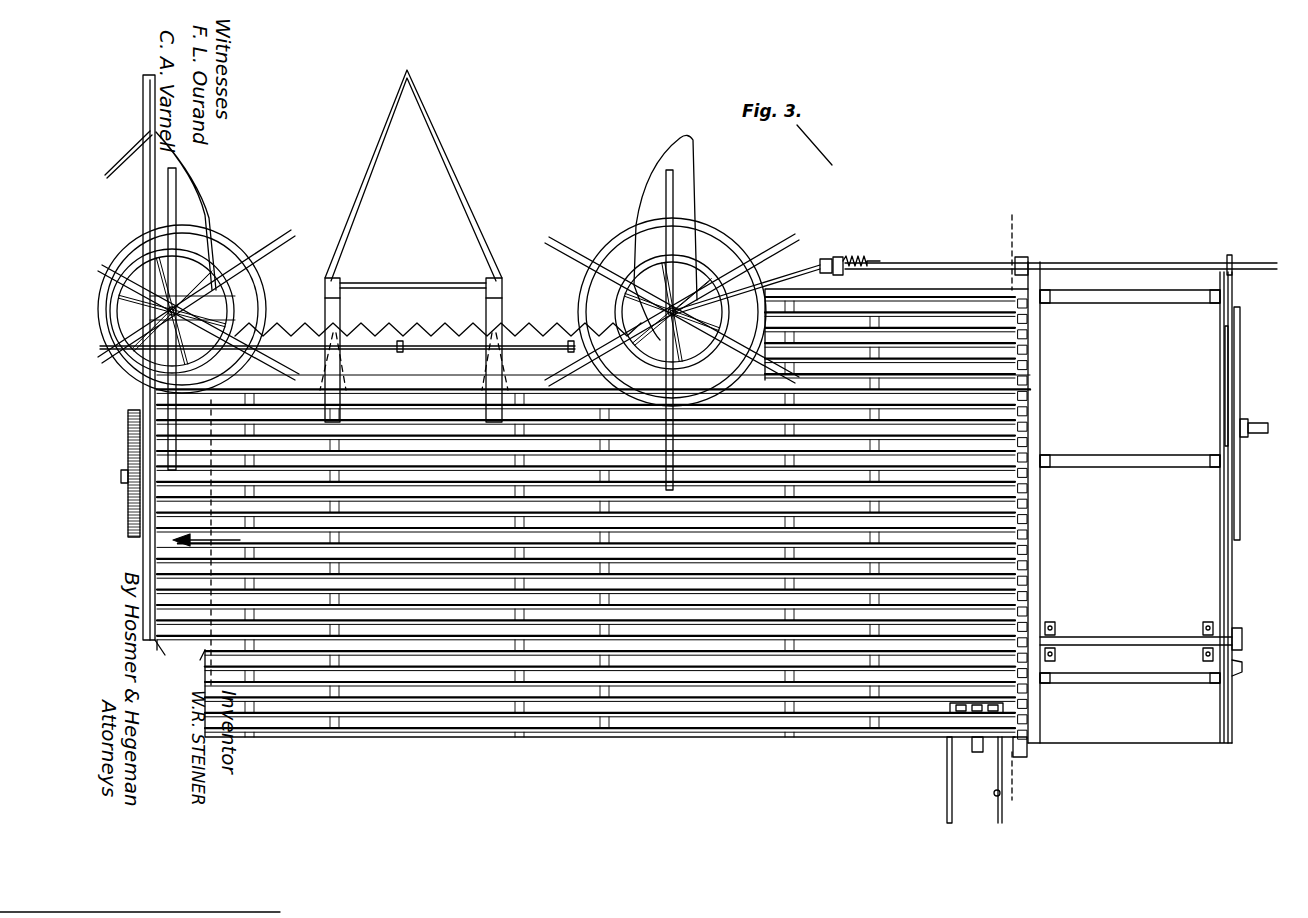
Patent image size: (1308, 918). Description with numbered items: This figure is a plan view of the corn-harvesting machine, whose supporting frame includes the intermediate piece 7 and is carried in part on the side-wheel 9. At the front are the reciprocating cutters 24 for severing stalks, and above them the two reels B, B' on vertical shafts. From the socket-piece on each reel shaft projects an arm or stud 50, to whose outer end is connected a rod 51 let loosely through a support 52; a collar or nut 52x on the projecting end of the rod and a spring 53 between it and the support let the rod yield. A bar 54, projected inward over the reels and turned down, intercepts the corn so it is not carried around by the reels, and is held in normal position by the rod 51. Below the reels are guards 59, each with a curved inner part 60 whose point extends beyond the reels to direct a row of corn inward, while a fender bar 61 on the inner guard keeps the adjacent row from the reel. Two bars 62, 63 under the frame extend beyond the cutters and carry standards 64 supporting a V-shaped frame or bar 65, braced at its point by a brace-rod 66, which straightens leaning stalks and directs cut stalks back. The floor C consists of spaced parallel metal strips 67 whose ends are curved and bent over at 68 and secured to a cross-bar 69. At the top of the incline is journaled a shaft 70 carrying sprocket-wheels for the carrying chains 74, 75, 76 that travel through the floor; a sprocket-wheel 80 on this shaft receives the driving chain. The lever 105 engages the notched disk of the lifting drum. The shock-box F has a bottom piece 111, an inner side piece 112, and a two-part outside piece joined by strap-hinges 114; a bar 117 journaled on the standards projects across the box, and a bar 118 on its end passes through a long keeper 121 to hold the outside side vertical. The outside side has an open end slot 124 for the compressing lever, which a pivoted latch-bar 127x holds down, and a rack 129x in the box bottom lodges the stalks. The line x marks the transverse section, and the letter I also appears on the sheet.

The intermediate piece 7 is at (240, 360).
The side-wheel 9 is at (128, 462).
The reciprocating cutters 24 is at (370, 330).
The arm or stud 50 is at (432, 312).
The rod 51 is at (705, 280).
The support 52 is at (817, 254).
The collar or nut 52x is at (874, 249).
The spring 53 is at (846, 254).
The bar 54 is at (150, 398).
The guard 59 is at (234, 205).
The curved inner part 60 is at (436, 329).
The fender bar 61 is at (128, 148).
The bar 62 is at (322, 472).
The bar 63 is at (512, 438).
The standard 64 is at (340, 283).
The V-shaped frame or bar 65 is at (413, 175).
The brace-rod 66 is at (413, 244).
The metal strips 67 is at (592, 514).
The curved and bent-over ends 68 is at (1040, 540).
The cross-bar 69 is at (1030, 262).
The shaft 70 is at (172, 541).
The carrying chain 74 is at (593, 372).
The carrying chain 75 is at (596, 532).
The carrying chain 76 is at (610, 660).
The sprocket-wheel 80 is at (962, 710).
The lever 105 is at (1040, 806).
The bottom piece 111 is at (1130, 343).
The inner side piece 112 is at (1040, 583).
The strap-hinges 114 is at (1135, 700).
The bar 117 is at (1185, 256).
The bar 118 is at (1240, 415).
The keeper 121 is at (1240, 365).
The open end slot 124 is at (1243, 640).
The latch-bar 127x is at (1270, 676).
The rack 129x is at (1162, 628).
The reel B is at (244, 237).
The reel B' is at (730, 216).
The floor C is at (761, 506).
The shock-box F is at (1125, 564).
The leg I is at (932, 780).
The section line x is at (1013, 507).